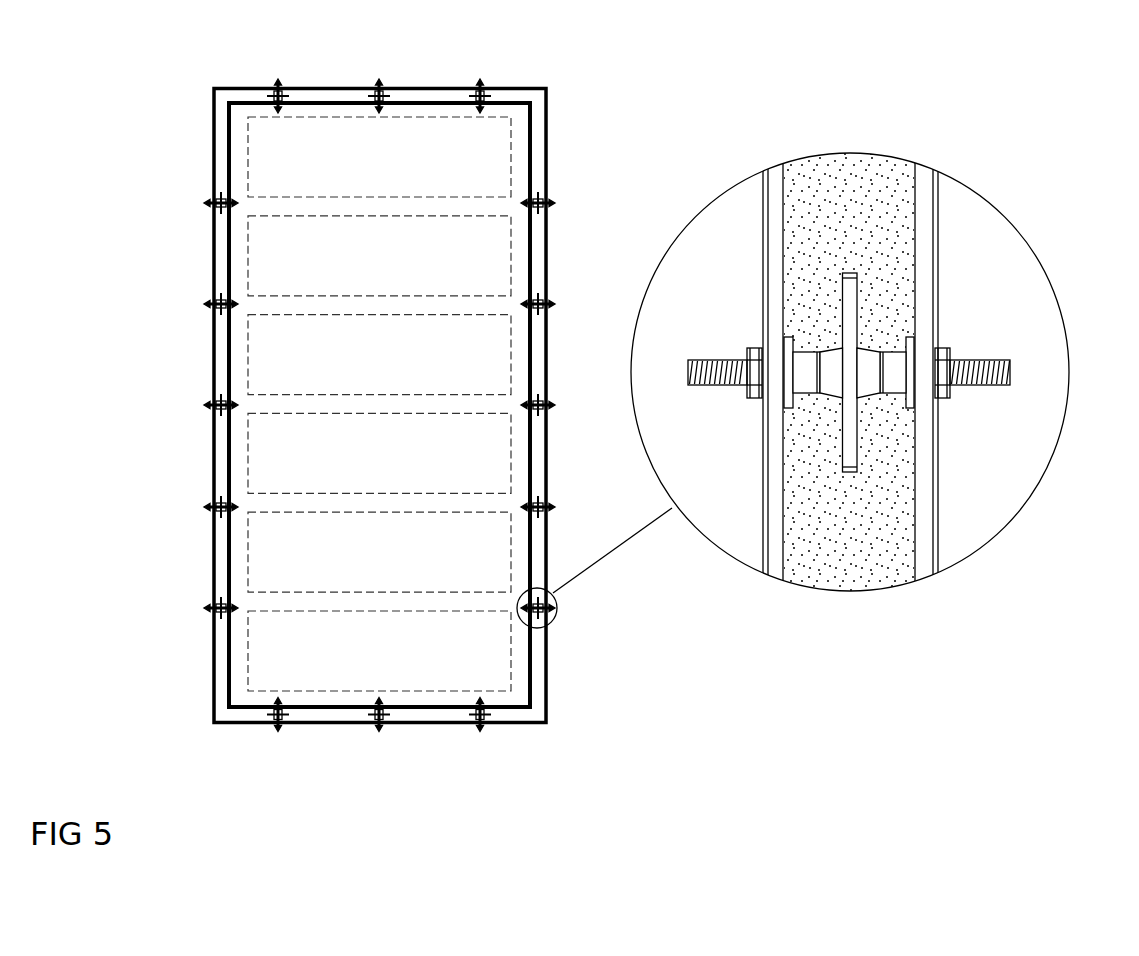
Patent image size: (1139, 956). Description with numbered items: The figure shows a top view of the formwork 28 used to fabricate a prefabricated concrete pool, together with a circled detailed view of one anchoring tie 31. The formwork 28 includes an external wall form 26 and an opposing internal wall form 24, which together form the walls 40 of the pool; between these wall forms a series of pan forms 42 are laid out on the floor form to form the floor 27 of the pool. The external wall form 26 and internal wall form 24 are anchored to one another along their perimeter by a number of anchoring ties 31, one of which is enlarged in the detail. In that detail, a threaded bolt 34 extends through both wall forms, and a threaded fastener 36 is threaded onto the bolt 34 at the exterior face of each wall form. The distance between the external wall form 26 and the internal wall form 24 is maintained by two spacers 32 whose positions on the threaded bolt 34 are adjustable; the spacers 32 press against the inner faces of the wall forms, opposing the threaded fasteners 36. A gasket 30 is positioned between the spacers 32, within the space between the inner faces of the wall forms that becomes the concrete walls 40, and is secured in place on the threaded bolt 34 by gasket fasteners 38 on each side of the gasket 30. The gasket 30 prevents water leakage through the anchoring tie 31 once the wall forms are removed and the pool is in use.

The internal wall form 24 is at (256, 102).
The external wall form 26 is at (413, 88).
The floor 27 is at (275, 602).
The formwork 28 is at (579, 415).
The gasket 30 is at (852, 290).
The anchoring tie 31 is at (896, 319).
The spacers 32 is at (893, 383).
The threaded rod or bolt 34 is at (990, 363).
The threaded fasteners 36 is at (940, 347).
The gasket fasteners 38 is at (833, 353).
The walls 40 is at (812, 190).
The pan forms 42 is at (248, 348).